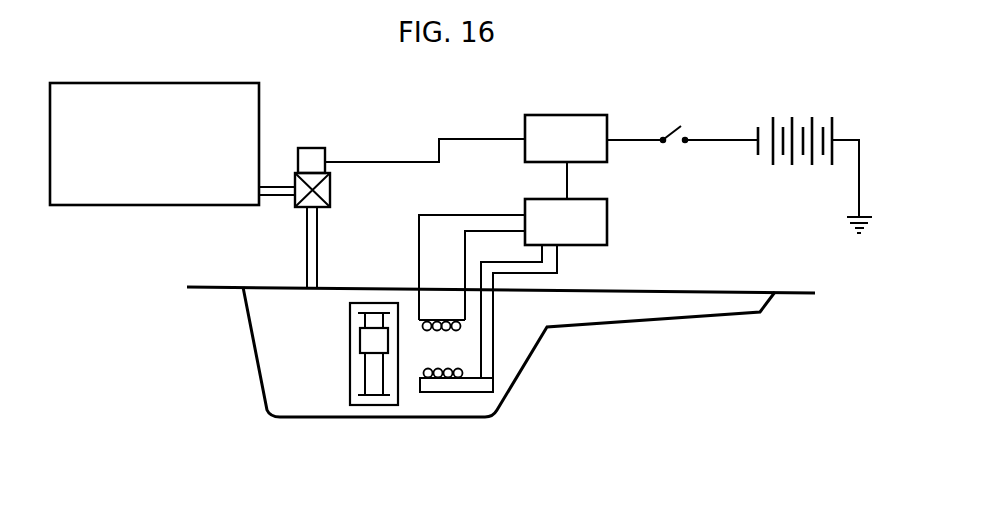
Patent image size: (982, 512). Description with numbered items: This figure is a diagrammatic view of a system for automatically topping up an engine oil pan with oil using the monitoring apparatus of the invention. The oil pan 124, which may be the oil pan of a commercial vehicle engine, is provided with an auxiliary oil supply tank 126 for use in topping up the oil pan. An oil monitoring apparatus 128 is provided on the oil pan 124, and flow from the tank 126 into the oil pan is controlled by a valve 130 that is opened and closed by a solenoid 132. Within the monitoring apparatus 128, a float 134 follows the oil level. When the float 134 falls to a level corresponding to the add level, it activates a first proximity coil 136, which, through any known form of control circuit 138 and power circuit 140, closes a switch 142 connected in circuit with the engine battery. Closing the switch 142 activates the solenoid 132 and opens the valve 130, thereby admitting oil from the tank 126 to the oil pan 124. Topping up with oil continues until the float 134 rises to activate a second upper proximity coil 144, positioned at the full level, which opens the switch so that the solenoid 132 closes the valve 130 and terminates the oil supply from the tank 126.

The oil pan 124 is at (527, 352).
The auxiliary oil supply tank 126 is at (122, 193).
The oil monitoring apparatus 128 is at (335, 380).
The valve 130 is at (287, 200).
The solenoid 132 is at (313, 157).
The float 134 is at (367, 347).
The first proximity coil 136 is at (442, 383).
The control circuit 138 is at (598, 227).
The power circuit 140 is at (582, 122).
The switch 142 is at (681, 125).
The second upper proximity coil 144 is at (440, 320).